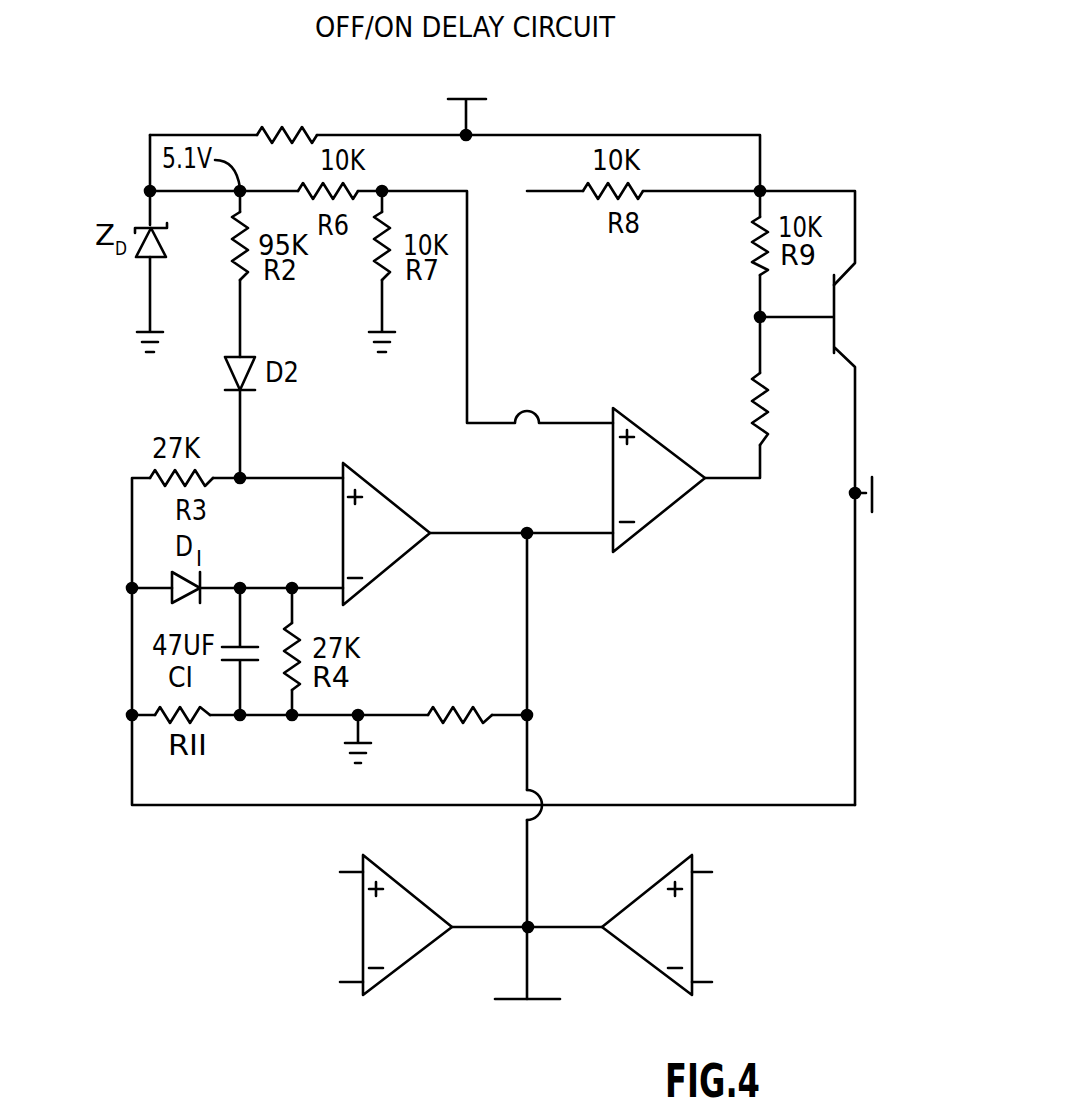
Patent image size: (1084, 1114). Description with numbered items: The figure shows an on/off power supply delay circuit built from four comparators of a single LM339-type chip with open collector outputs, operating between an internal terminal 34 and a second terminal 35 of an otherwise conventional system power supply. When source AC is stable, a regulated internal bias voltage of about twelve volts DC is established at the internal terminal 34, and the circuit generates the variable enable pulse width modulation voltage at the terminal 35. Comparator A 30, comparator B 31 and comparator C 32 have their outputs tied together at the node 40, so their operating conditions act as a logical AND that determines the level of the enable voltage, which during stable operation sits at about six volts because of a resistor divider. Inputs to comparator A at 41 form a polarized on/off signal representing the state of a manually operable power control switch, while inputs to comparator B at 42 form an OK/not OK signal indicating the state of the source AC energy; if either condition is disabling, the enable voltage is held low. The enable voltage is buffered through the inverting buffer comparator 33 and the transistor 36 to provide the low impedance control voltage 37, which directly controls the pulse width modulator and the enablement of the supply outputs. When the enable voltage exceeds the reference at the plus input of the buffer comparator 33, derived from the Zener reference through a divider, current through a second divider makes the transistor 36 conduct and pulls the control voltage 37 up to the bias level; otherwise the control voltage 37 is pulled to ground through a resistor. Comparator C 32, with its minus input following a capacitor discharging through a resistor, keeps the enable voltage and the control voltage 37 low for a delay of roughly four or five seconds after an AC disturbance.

The comparator A 30 is at (637, 947).
The comparator B 31 is at (403, 953).
The comparator C 32 is at (349, 528).
The comparator 33 is at (652, 513).
The internal terminal 34 is at (476, 100).
The terminal 35 is at (533, 1002).
The transistor Q1 36 is at (836, 338).
The control voltage signal Vc 37 is at (873, 512).
The tie point of comparator outputs 40 is at (530, 712).
The inputs to comparator A 41 is at (716, 930).
The inputs to comparator B 42 is at (316, 920).